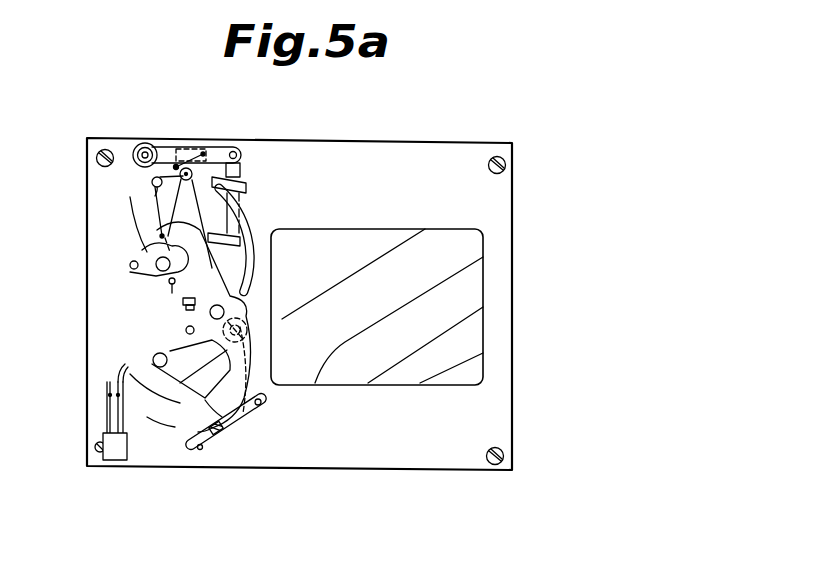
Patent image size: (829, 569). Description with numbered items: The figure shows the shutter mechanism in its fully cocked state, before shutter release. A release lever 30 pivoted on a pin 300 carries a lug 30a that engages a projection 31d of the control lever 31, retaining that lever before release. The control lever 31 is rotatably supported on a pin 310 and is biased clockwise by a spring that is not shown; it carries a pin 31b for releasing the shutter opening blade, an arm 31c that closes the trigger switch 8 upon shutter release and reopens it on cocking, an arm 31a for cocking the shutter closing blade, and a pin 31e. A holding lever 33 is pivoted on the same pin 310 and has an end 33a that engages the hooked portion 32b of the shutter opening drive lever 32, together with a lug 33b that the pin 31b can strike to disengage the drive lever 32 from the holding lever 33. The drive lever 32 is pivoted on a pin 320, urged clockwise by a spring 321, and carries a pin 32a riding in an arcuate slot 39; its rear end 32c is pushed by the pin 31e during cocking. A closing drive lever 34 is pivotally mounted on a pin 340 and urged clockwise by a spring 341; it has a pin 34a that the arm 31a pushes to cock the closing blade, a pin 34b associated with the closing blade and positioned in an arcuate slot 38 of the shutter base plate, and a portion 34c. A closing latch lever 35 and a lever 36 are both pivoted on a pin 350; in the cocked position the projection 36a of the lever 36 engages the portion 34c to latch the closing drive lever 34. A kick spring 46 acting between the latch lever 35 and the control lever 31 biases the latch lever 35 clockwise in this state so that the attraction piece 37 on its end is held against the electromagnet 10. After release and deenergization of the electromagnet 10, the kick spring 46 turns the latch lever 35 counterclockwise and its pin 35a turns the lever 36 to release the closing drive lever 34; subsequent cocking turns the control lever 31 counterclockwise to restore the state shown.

The first switch 8 is at (117, 458).
The electromagnet 10 is at (243, 205).
The release lever 30 is at (271, 398).
The lug 30a is at (222, 430).
The control lever 31 is at (187, 415).
The arm 31a is at (152, 253).
The pin 31b is at (186, 328).
The arm 31c is at (120, 372).
The projection 31d is at (220, 421).
The pin 31e is at (145, 415).
The shutter opening drive lever 32 is at (226, 420).
The pin 32a is at (253, 324).
The hooked portion 32b is at (250, 317).
The rear end 32c is at (160, 392).
The holding lever 33 is at (214, 306).
The end 33a is at (250, 340).
The lug 33b is at (183, 305).
The closing drive lever 34 is at (168, 210).
The pin 34a is at (133, 262).
The pin 34b is at (246, 180).
The portion 34c is at (178, 172).
The closing latch lever 35 is at (218, 150).
The pin 35a is at (188, 158).
The lever 36 is at (160, 146).
The projection 36a is at (173, 164).
The attraction piece 37 is at (241, 160).
The arcuate slot 38 is at (253, 254).
The arcuate slot 39 is at (200, 451).
The kick spring 46 is at (155, 198).
The pin 300 is at (261, 405).
The pin 310 is at (256, 290).
The pin 320 is at (153, 357).
The spring 321 is at (152, 416).
The pin 340 is at (158, 276).
The spring 341 is at (122, 269).
The pin 350 is at (140, 157).